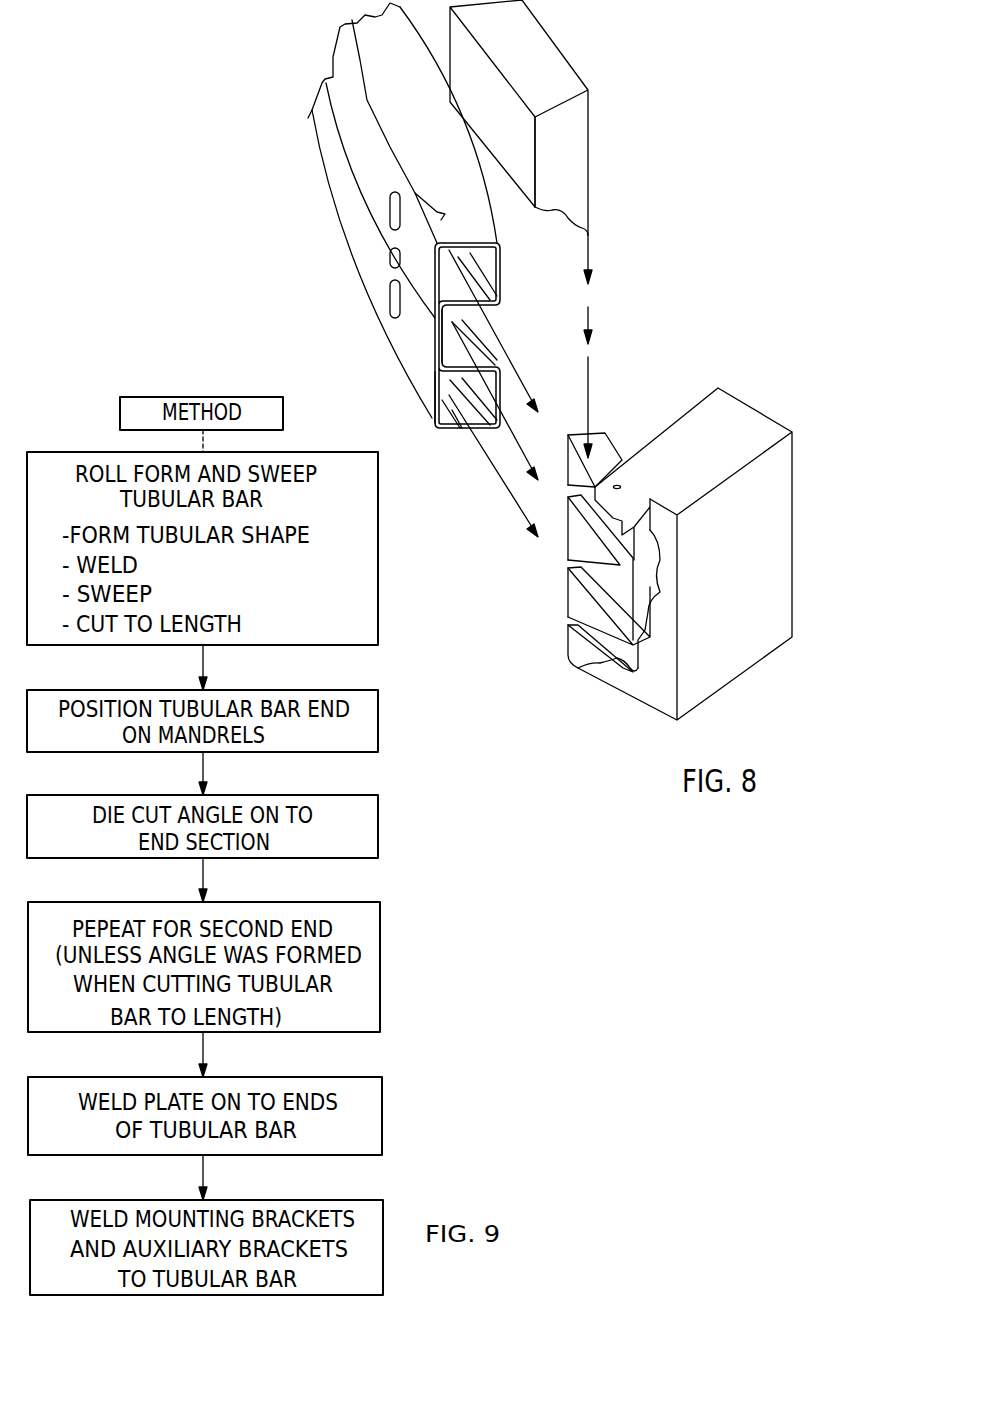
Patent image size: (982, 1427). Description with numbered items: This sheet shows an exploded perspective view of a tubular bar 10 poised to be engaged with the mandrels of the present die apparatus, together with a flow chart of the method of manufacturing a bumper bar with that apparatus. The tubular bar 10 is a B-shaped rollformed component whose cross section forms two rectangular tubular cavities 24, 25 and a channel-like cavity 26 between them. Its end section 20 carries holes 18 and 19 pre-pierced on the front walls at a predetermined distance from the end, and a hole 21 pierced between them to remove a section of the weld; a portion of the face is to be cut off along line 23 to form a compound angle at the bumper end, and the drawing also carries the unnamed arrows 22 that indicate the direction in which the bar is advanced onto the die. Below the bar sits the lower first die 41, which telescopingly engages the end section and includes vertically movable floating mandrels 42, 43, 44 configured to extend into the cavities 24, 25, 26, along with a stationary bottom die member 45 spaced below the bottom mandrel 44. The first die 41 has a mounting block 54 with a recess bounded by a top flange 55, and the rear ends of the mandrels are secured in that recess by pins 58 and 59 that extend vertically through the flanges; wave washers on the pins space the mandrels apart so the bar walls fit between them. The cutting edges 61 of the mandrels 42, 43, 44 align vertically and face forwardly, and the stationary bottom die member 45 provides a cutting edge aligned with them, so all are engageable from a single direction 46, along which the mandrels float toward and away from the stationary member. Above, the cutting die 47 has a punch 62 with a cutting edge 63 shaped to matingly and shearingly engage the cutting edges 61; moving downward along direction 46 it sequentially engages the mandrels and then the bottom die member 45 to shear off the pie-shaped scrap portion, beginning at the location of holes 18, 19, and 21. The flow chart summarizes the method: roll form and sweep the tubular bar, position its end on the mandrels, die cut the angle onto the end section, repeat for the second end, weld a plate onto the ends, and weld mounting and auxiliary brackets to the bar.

The tubular bar 10 is at (294, 146).
The hole 18 is at (390, 307).
The hole 19 is at (390, 218).
The end section 20 is at (358, 157).
The hole 21 is at (390, 262).
The direction arrows 22 is at (465, 243).
The cut line 23 is at (447, 216).
The tubular cavity 24 is at (445, 430).
The tubular cavity 25 is at (498, 278).
The channel-like cavity 26 is at (463, 338).
The first die 41 is at (610, 710).
The mandrel 42 is at (655, 560).
The mandrel 43 is at (645, 612).
The bottom mandrel 44 is at (632, 657).
The stationary bottom die member 45 is at (563, 648).
The single direction 46 is at (592, 378).
The cutting die 47 is at (583, 136).
The mounting block 54 is at (757, 663).
The top flange 55 is at (618, 500).
The pin 58 is at (652, 494).
The pin 59 is at (621, 484).
The cutting edge 61 is at (603, 433).
The punch 62 is at (590, 208).
The cutting edge 63 is at (590, 238).